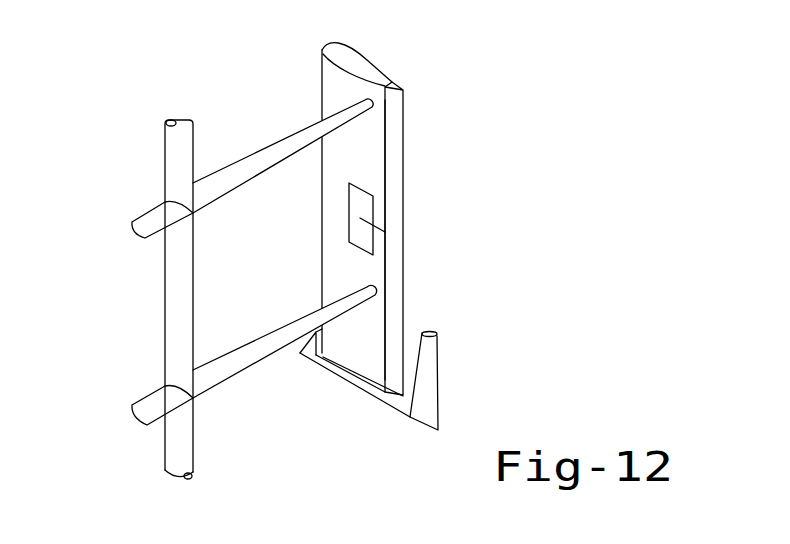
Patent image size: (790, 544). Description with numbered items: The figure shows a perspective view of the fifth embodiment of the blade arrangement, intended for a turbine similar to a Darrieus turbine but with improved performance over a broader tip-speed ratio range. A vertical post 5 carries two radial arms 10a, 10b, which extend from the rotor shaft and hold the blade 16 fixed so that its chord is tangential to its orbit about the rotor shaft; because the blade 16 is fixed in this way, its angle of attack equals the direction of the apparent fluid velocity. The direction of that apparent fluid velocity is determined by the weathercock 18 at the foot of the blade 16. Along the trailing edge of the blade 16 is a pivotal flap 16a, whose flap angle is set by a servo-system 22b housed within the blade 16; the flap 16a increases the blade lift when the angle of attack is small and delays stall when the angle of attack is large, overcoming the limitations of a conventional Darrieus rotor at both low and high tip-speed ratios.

The post 5 is at (177, 163).
The radial arm 10a is at (245, 170).
The radial arm 10b is at (253, 350).
The blade 16 is at (357, 60).
The flap 16a is at (393, 178).
The weathercock 18 is at (428, 375).
The servo-system 22b is at (357, 230).